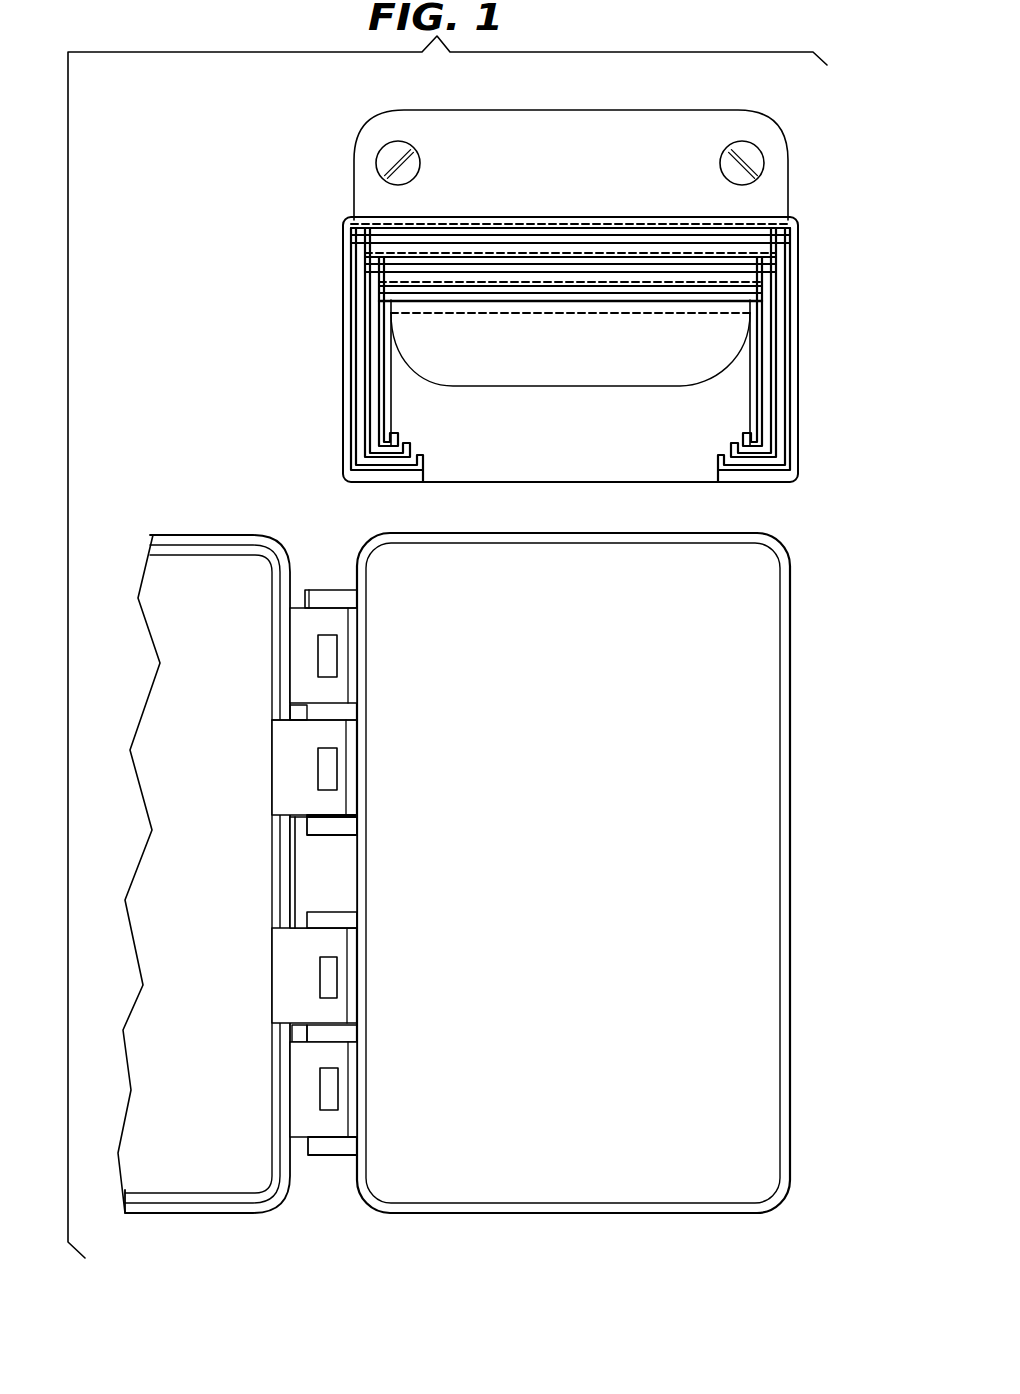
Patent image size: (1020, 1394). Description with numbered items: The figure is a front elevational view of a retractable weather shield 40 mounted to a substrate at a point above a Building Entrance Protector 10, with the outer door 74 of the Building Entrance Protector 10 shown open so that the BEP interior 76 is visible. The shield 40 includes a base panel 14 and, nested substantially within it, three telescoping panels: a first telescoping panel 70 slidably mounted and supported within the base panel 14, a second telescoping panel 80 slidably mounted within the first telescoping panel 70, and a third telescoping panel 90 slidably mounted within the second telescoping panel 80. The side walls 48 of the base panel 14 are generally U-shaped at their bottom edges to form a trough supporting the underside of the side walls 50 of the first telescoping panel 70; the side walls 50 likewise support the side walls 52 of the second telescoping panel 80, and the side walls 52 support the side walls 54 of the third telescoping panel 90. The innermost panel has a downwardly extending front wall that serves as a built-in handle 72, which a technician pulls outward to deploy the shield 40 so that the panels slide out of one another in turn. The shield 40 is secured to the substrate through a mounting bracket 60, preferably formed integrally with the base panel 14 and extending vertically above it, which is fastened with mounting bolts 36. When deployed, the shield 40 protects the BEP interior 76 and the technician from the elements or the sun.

The Building Entrance Protector 10 is at (338, 518).
The base panel 14 is at (415, 220).
The mounting bolts 36 is at (410, 165).
The retractable weather shield 40 is at (283, 182).
The side walls of base panel 48 is at (347, 448).
The side walls of first telescoping panel 50 is at (355, 407).
The side walls of second telescoping panel 52 is at (370, 380).
The side walls of third telescoping panel 54 is at (383, 370).
The mounting bracket 60 is at (567, 118).
The first telescoping panel 70 is at (485, 248).
The handle 72 is at (562, 377).
The outer door 74 is at (188, 540).
The BEP interior 76 is at (726, 746).
The second telescoping panel 80 is at (566, 275).
The third telescoping panel 90 is at (698, 308).